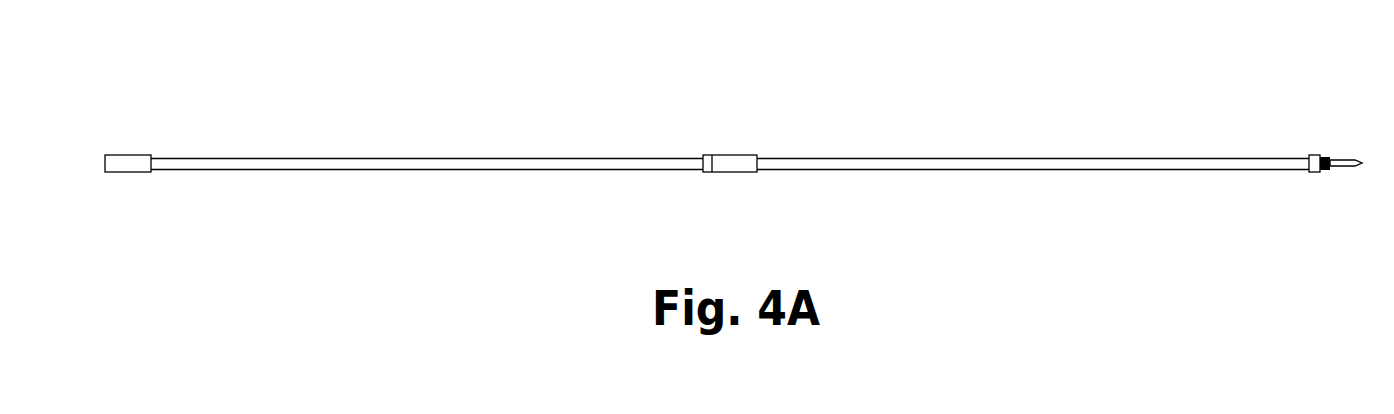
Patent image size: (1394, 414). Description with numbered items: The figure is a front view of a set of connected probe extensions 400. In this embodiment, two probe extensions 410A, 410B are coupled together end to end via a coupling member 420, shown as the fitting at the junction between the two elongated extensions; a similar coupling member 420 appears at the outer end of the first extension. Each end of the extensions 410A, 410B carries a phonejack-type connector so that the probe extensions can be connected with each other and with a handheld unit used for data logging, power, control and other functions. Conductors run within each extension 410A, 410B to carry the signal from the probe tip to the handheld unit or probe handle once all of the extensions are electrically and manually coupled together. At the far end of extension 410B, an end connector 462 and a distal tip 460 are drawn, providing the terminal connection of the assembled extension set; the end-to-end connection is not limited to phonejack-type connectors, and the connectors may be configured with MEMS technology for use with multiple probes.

The set of connected probe extensions 400 is at (214, 48).
The probe extension 410A is at (498, 176).
The probe extension 410B is at (1004, 176).
The coupling member 420 is at (127, 178).
The end connector 462 is at (1325, 178).
The distal tip 460 is at (1342, 176).